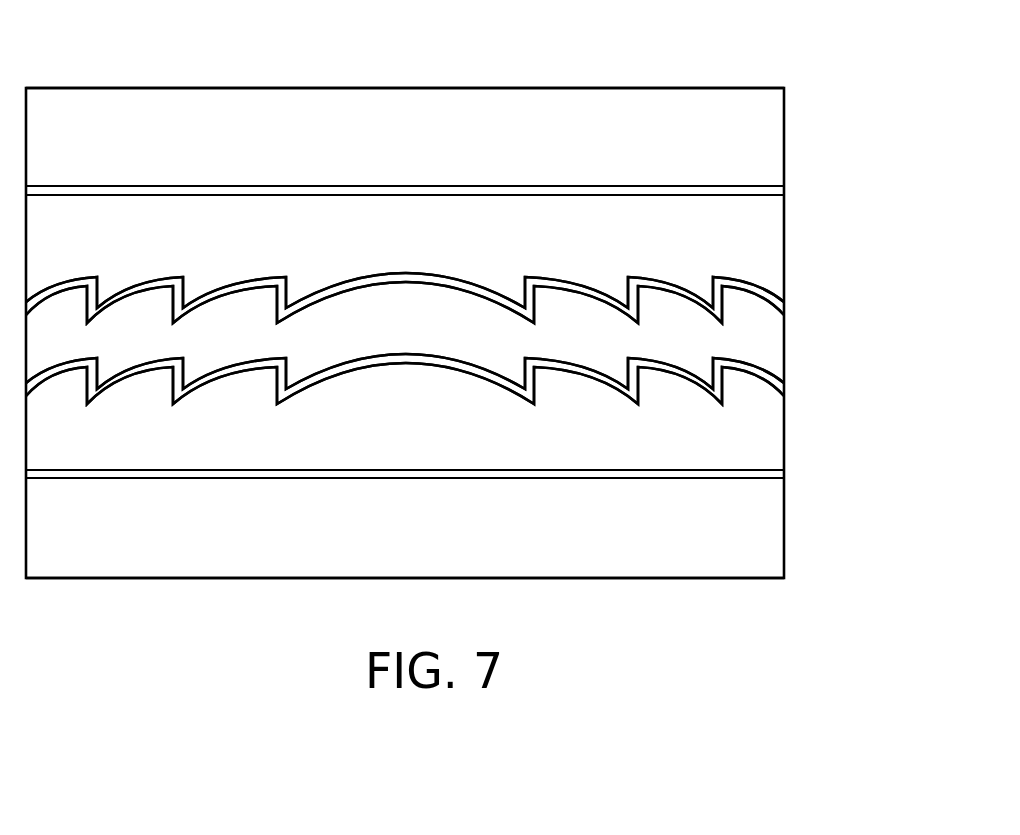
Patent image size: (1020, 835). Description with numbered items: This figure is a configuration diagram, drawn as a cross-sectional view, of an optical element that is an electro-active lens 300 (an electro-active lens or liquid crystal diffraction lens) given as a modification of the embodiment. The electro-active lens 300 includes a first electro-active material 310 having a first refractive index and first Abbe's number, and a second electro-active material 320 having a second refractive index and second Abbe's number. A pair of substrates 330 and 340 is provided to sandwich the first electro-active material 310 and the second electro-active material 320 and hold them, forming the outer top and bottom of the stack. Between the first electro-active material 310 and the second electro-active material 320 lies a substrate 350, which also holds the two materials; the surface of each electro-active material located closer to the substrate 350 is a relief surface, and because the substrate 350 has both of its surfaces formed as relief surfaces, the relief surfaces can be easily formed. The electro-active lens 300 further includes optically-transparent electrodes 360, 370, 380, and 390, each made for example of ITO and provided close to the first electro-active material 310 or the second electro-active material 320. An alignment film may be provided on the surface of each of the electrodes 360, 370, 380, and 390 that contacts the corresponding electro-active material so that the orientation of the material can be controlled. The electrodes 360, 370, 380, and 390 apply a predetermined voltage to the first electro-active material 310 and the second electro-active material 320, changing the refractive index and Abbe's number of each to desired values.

The electro-active lens 300 is at (831, 27).
The first electro-active material 310 is at (608, 238).
The second electro-active material 320 is at (607, 432).
The substrate 330 is at (743, 138).
The substrate 340 is at (743, 555).
The substrate 350 is at (596, 330).
The optically-transparent electrode 360 is at (785, 192).
The optically-transparent electrode 370 is at (785, 312).
The optically-transparent electrode 380 is at (785, 397).
The optically-transparent electrode 390 is at (785, 475).